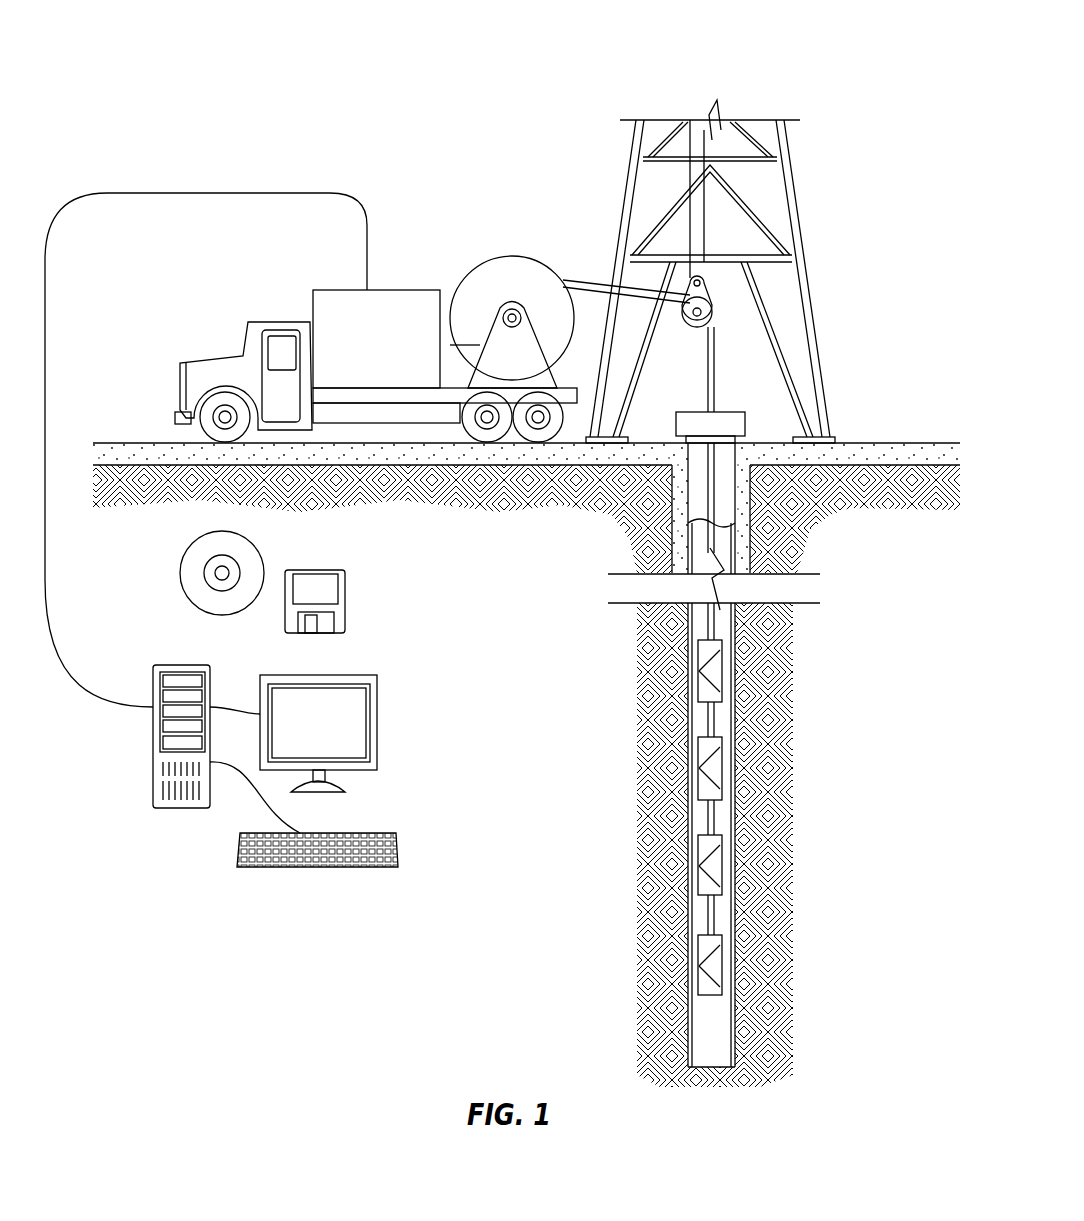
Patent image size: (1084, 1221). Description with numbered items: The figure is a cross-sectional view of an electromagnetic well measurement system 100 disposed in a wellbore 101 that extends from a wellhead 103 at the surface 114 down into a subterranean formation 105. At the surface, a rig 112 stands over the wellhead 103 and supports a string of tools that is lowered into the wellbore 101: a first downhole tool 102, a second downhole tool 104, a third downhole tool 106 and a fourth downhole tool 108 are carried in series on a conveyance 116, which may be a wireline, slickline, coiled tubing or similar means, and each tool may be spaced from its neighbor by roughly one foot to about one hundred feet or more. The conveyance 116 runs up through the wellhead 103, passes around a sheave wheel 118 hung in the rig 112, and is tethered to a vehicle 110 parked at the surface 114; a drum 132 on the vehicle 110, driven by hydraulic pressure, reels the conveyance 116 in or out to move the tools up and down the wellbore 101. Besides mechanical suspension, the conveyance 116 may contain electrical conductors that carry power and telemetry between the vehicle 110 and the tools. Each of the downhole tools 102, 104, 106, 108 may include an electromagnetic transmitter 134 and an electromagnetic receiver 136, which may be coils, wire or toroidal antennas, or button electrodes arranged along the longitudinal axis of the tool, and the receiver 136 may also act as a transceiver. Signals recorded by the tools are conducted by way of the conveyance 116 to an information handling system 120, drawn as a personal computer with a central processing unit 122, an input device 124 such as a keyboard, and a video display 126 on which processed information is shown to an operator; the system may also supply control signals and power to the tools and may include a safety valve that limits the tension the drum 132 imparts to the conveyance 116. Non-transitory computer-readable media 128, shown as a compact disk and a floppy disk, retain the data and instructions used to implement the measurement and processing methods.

The electromagnetic well measurement system 100 is at (174, 110).
The wellbore 101 is at (826, 553).
The first downhole tool 102 is at (700, 960).
The wellhead 103 is at (768, 415).
The second downhole tool 104 is at (722, 870).
The subterranean formation 105 is at (910, 684).
The third downhole tool 106 is at (700, 755).
The fourth downhole tool 108 is at (722, 672).
The vehicle 110 is at (388, 290).
The rig 112 is at (803, 272).
The surface 114 is at (874, 443).
The conveyance 116 is at (697, 620).
The sheave wheel 118 is at (692, 326).
The information handling system 120 is at (172, 899).
The central processing unit 122 is at (182, 665).
The input device 124 is at (398, 850).
The video display 126 is at (318, 675).
The non-transitory computer-readable media 128 is at (247, 537).
The drum 132 is at (512, 262).
The electromagnetic transmitter 134 is at (704, 660).
The electromagnetic receiver 136 is at (704, 684).